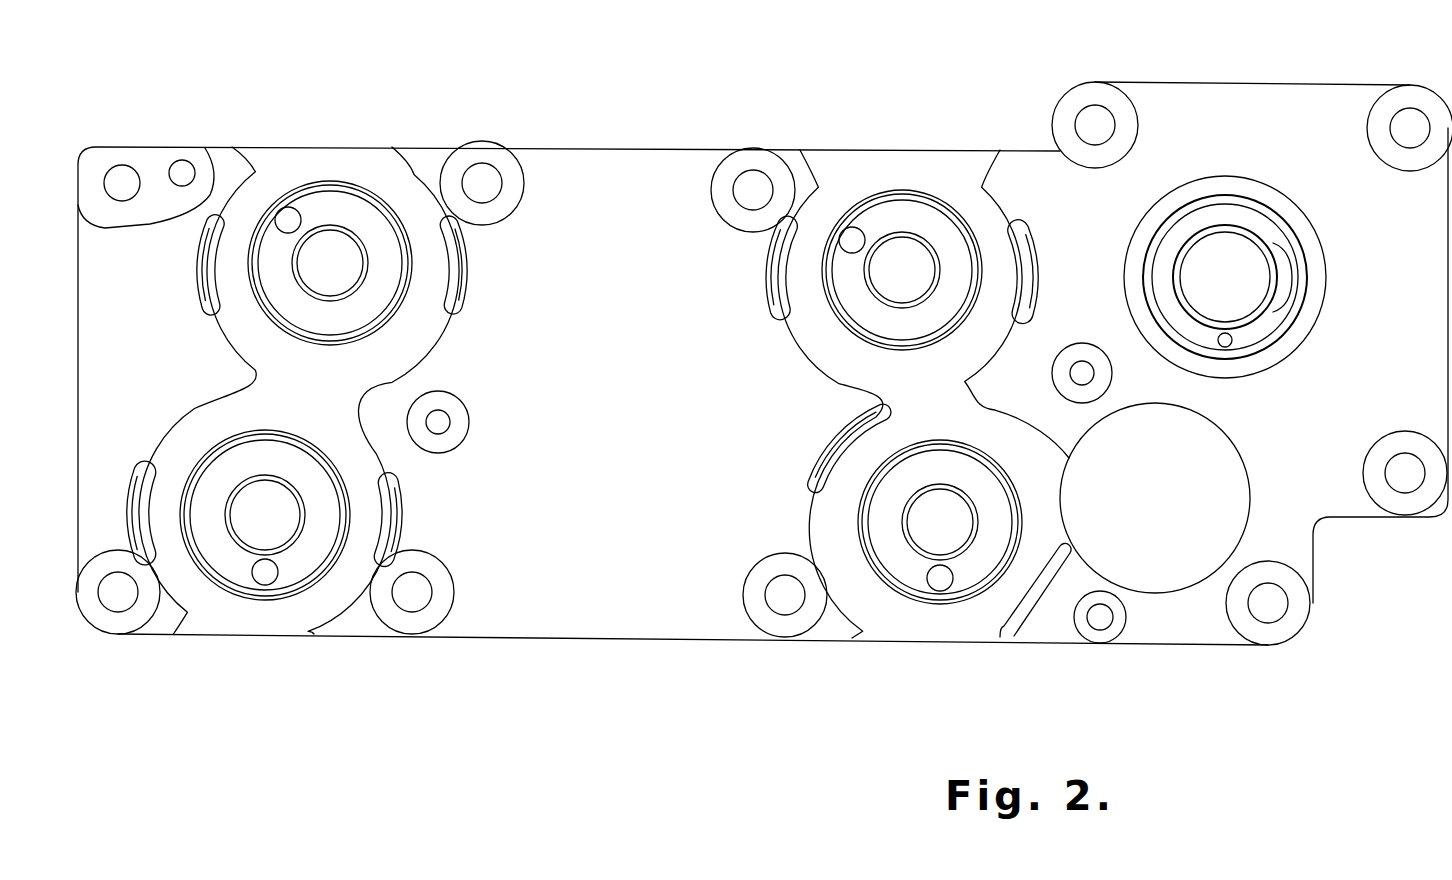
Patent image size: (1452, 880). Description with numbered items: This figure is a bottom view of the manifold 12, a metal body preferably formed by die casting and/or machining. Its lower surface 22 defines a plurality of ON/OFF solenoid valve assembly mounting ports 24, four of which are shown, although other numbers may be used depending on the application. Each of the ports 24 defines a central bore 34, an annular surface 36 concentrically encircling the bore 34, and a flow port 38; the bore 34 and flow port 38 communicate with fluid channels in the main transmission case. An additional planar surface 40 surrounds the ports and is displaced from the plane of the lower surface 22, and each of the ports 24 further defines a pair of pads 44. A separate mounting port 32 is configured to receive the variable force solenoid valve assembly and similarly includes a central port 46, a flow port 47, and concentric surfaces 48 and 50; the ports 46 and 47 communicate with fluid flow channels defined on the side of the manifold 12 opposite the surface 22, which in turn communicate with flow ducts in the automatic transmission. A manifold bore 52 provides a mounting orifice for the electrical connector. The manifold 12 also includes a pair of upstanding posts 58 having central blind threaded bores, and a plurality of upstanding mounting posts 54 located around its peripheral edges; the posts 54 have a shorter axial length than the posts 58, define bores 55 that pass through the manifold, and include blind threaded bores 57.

The manifold 12 is at (601, 638).
The lower surface 22 is at (695, 615).
The ON/OFF solenoid valve assembly mounting port 24 is at (332, 180).
The mounting port 32 is at (1273, 215).
The central bore 34 is at (348, 290).
The annular surface 36 is at (292, 302).
The flow port 38 is at (282, 218).
The planar surface 40 is at (388, 157).
The pad 44 is at (198, 267).
The central port 46 is at (1292, 268).
The flow port 47 is at (1226, 348).
The concentric surface 48 is at (1285, 325).
The concentric surface 50 is at (1298, 342).
The manifold bore 52 is at (1242, 468).
The upstanding mounting post 54 is at (148, 145).
The bore 55 is at (124, 195).
The blind threaded bore 57 is at (185, 168).
The upstanding post 58 is at (455, 405).